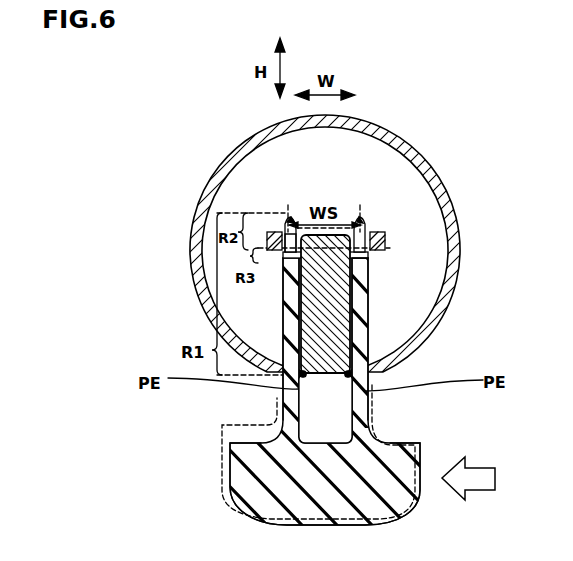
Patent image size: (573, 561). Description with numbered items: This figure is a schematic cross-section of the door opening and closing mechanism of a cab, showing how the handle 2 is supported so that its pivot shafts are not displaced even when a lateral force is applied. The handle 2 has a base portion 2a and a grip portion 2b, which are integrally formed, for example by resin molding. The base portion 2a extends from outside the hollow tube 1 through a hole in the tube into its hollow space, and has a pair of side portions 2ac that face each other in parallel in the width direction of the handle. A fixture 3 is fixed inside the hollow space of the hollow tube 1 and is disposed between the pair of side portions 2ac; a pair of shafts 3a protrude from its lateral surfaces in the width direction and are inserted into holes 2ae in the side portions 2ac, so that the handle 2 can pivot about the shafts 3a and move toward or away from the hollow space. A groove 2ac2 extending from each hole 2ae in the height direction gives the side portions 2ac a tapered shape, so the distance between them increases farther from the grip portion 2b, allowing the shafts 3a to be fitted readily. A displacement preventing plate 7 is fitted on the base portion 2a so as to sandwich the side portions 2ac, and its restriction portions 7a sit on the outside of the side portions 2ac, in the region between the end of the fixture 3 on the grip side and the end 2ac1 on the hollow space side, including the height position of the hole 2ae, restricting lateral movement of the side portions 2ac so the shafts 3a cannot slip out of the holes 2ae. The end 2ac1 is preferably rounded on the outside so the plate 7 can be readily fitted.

The hollow tube 1 is at (458, 260).
The handle 2 is at (271, 356).
The base portion 2a is at (282, 411).
The grip portion 2b is at (247, 470).
The side portions 2ac is at (333, 169).
The end on the hollow space side of side portion 2ac1 is at (287, 218).
The groove 2ac2 is at (290, 225).
The hole 2ae is at (363, 265).
The fixture 3 is at (327, 362).
The shafts 3a is at (352, 257).
The displacement preventing plate 7 is at (271, 253).
The restriction portions 7a is at (270, 232).